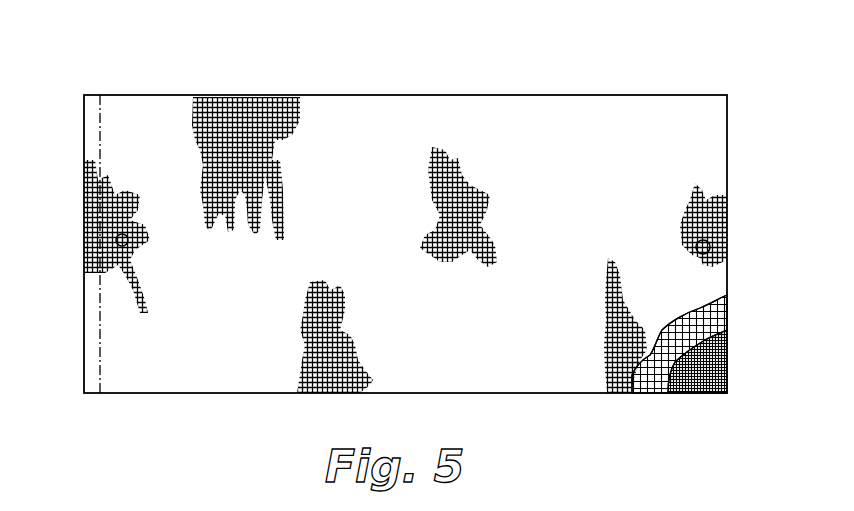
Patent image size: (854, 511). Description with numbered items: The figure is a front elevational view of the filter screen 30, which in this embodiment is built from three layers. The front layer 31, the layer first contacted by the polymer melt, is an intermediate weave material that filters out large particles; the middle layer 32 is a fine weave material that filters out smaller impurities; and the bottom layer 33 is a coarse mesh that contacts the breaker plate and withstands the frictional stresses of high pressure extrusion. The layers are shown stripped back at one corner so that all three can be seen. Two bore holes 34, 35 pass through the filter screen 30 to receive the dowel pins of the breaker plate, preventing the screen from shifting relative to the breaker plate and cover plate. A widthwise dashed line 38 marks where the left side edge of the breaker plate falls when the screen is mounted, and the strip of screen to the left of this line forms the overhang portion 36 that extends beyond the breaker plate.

The filter screen 30 is at (398, 233).
The front layer 31 is at (712, 279).
The middle layer 32 is at (715, 320).
The bottom layer 33 is at (727, 356).
The bore hole 34 is at (117, 241).
The bore hole 35 is at (710, 248).
The overhang portion 36 is at (84, 400).
The dashed line 38 is at (98, 337).